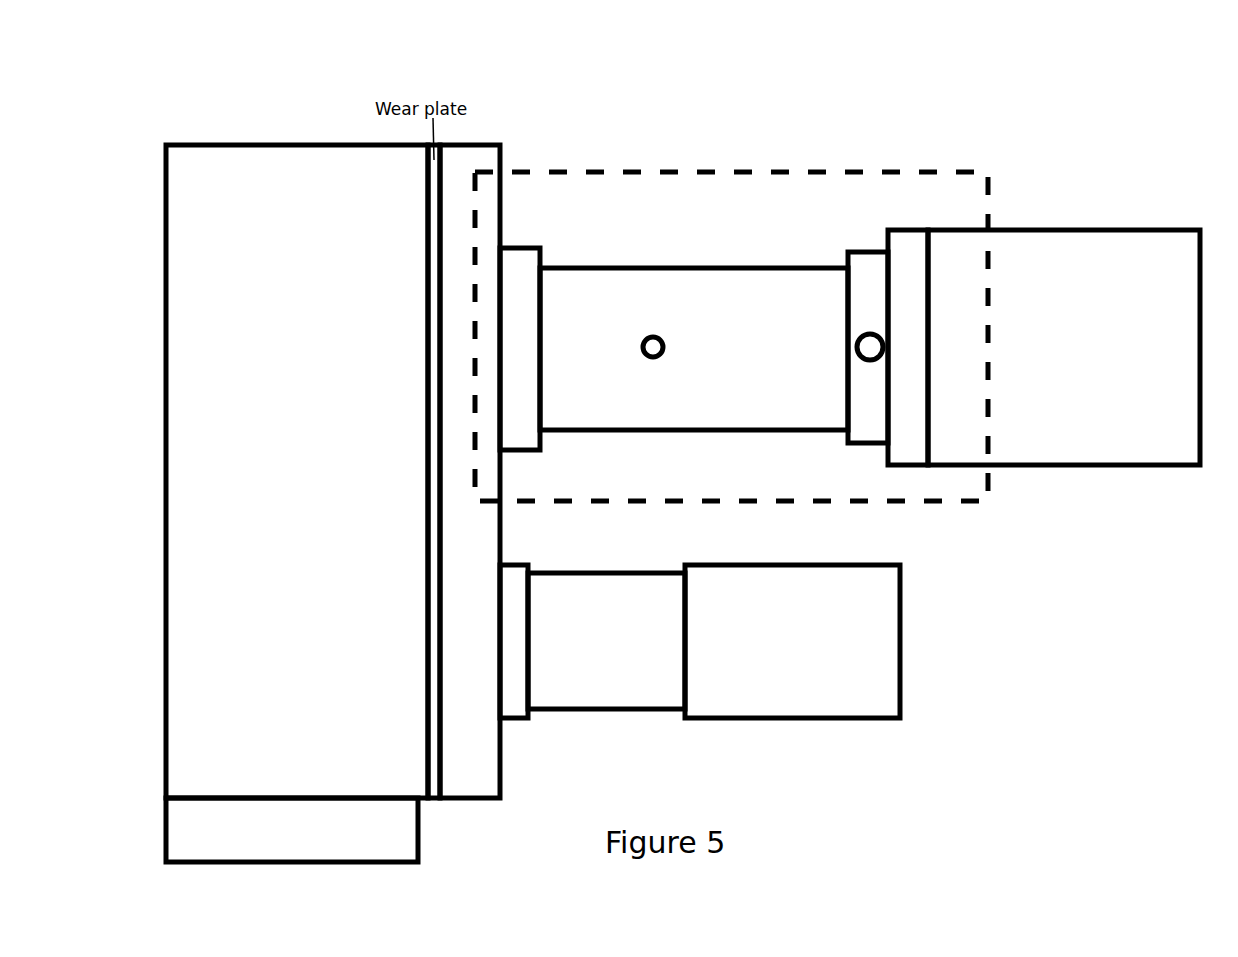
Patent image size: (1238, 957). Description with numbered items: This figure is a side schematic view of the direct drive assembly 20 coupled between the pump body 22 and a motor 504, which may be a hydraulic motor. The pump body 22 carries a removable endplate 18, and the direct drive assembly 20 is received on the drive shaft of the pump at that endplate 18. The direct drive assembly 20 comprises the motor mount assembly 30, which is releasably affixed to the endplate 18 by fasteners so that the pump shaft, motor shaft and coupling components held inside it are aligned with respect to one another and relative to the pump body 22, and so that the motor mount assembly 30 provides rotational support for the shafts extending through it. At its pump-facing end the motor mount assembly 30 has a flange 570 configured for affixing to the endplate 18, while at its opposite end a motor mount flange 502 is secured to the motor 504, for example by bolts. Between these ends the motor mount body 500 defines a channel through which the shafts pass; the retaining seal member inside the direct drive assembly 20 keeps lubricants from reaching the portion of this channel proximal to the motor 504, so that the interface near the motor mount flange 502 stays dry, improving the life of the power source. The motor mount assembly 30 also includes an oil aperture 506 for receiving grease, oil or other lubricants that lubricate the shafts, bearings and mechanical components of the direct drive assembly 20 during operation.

The pump body 22 is at (316, 160).
The endplate 18 is at (470, 158).
The flange 570 is at (518, 270).
The motor mount assembly 30 is at (726, 254).
The motor mount body 500 is at (748, 344).
The oil aperture 506 is at (653, 340).
The motor mount flange 502 is at (915, 240).
The motor 504 is at (1049, 255).
The direct drive assembly 20 is at (893, 174).